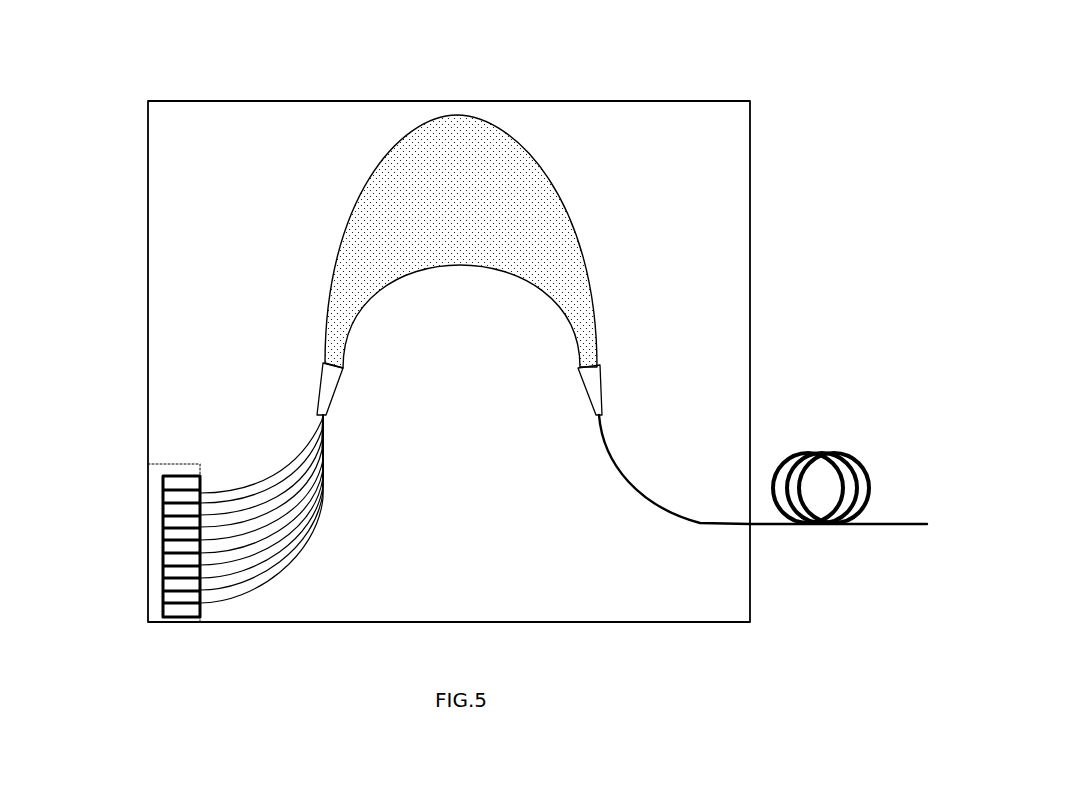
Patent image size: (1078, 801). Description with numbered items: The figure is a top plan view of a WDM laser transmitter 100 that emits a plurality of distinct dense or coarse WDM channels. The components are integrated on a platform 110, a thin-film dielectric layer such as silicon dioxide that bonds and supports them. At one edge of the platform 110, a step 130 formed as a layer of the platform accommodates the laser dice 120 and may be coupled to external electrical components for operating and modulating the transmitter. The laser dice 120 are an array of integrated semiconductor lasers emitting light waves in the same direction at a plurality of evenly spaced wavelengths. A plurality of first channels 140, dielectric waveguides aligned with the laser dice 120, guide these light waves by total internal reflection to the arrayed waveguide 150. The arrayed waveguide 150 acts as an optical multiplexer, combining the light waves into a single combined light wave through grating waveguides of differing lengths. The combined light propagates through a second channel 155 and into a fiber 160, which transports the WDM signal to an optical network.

The WDM laser transmitter 100 is at (106, 95).
The platform 110 is at (714, 139).
The laser dice 120 is at (180, 476).
The step 130 is at (157, 513).
The first channels 140 is at (325, 455).
The arrayed waveguide (AWG) 150 is at (538, 165).
The second channel 155 is at (642, 495).
The fiber 160 is at (827, 453).